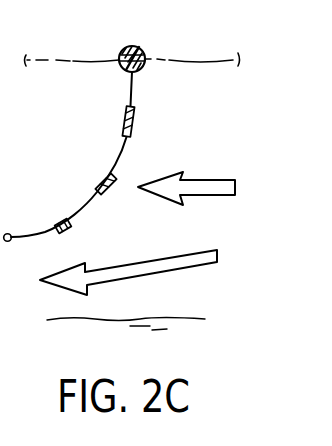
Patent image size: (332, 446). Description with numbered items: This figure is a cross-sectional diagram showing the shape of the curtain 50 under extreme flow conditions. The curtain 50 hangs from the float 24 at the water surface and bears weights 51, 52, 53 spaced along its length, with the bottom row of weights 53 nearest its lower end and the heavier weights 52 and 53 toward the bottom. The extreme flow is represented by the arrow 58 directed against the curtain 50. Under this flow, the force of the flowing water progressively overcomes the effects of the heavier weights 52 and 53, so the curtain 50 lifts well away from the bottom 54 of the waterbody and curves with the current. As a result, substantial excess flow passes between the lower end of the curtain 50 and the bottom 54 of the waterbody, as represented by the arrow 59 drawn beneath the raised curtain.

The float 24 is at (134, 45).
The curtain 50 is at (118, 158).
The weight 51 is at (123, 116).
The weight 52 is at (99, 188).
The bottom row of weights 53 is at (57, 224).
The bottom of the waterbody 54 is at (123, 351).
The arrow 58 is at (236, 180).
The arrow 59 is at (212, 250).